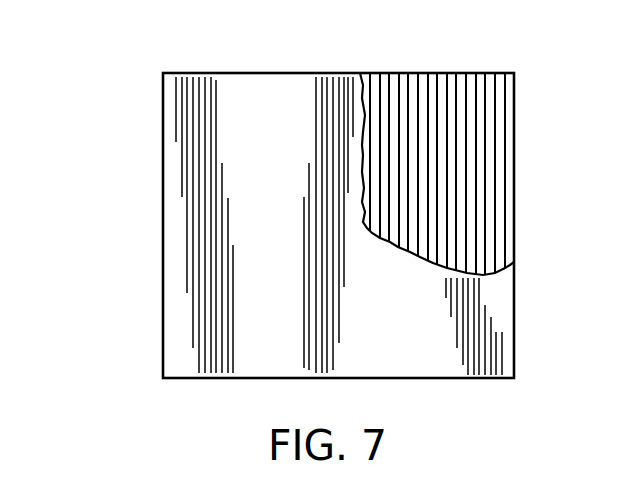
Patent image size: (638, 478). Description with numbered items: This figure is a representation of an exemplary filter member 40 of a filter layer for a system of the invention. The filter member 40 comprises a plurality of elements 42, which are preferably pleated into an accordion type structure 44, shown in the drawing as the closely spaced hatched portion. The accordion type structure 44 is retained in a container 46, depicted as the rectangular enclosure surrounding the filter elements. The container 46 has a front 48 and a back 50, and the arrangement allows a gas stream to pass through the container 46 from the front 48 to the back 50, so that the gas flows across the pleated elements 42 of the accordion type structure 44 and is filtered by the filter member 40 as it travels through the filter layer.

The filter member 40 is at (89, 136).
The elements 42 is at (443, 83).
The accordion type structure 44 is at (485, 207).
The container 46 is at (273, 316).
The front 48 is at (230, 73).
The back 50 is at (473, 380).